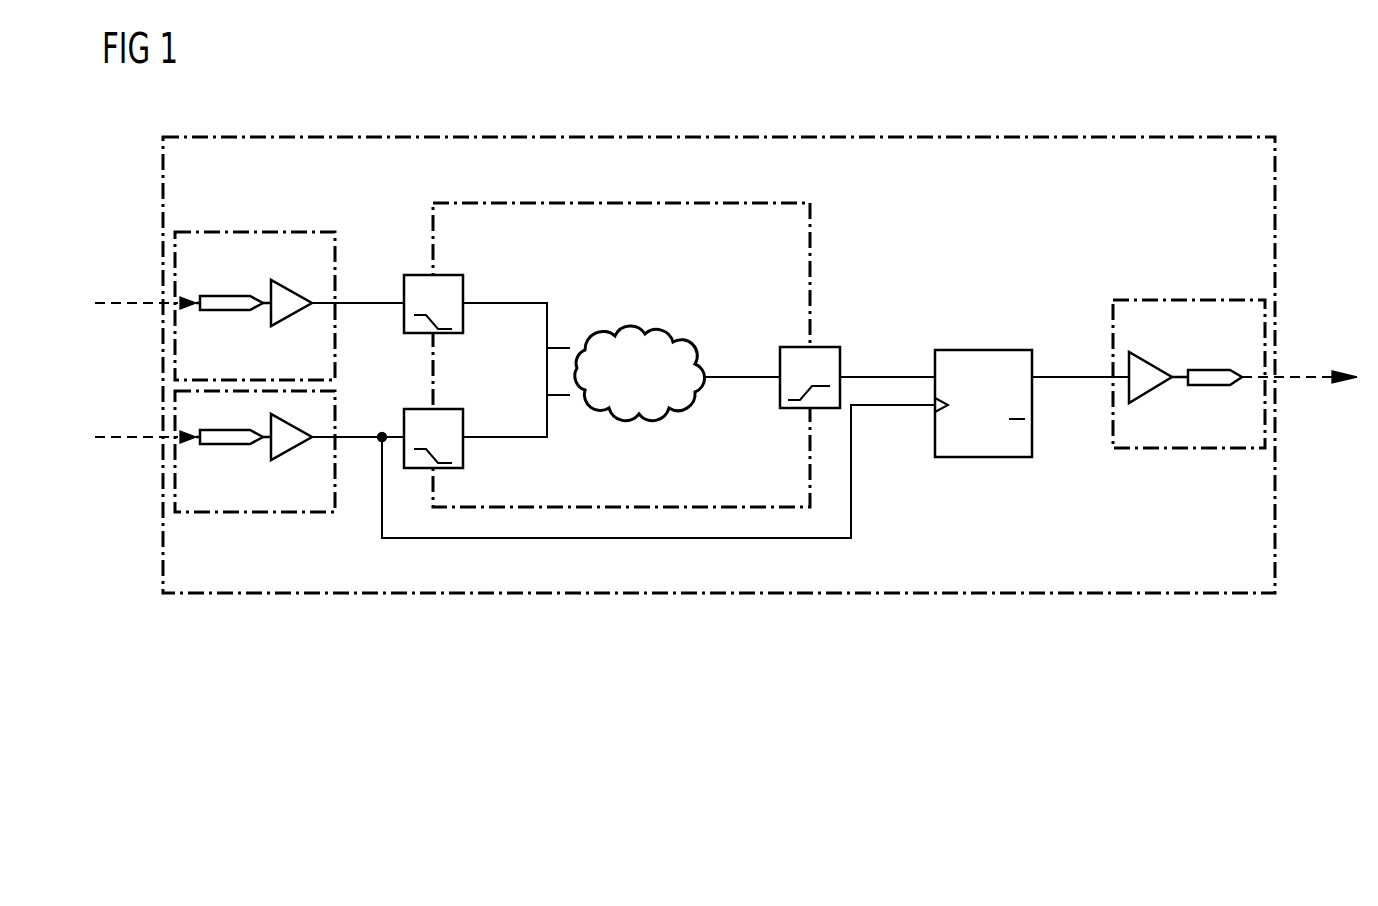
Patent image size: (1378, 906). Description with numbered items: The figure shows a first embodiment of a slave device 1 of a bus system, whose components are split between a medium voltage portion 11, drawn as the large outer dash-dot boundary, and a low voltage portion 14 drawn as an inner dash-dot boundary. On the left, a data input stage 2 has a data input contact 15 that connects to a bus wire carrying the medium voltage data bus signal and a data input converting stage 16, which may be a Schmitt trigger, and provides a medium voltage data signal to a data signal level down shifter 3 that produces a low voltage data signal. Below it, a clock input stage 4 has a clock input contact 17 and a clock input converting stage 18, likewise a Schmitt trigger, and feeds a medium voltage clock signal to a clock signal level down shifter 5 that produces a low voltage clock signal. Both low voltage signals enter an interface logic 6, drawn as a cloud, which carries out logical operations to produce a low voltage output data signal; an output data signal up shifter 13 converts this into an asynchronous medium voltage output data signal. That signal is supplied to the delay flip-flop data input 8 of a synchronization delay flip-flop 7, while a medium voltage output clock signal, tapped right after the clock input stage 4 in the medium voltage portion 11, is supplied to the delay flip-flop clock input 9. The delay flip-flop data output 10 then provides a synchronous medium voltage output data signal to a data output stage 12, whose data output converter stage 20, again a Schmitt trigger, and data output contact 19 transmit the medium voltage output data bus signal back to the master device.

The slave device 1 is at (1186, 88).
The data input stage 2 is at (265, 232).
The data signal level down shifter 3 is at (452, 275).
The clock input stage 4 is at (258, 512).
The clock signal level down shifter 5 is at (452, 409).
The interface logic 6 is at (615, 327).
The synchronization delay flip-flop 7 is at (985, 350).
The delay flip-flop data input 8 is at (935, 372).
The delay flip-flop clock input 9 is at (935, 410).
The delay flip-flop data output 10 is at (1035, 380).
The medium voltage portion 11 is at (877, 137).
The data output stage 12 is at (1163, 300).
The output data signal up shifter 13 is at (780, 392).
The low voltage portion 14 is at (607, 203).
The data input contact 15 is at (225, 313).
The data input converting stage 16 is at (290, 320).
The clock input contact 17 is at (225, 447).
The clock input converting stage 18 is at (290, 455).
The data output contact 19 is at (1213, 386).
The data output converter stage 20 is at (1150, 364).